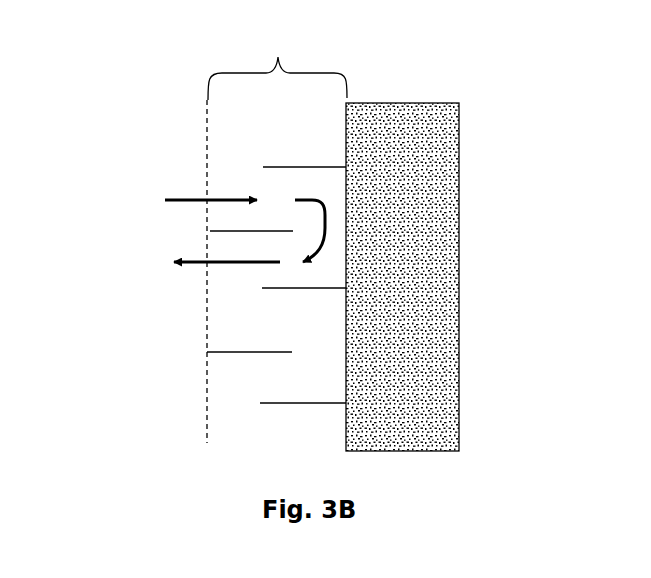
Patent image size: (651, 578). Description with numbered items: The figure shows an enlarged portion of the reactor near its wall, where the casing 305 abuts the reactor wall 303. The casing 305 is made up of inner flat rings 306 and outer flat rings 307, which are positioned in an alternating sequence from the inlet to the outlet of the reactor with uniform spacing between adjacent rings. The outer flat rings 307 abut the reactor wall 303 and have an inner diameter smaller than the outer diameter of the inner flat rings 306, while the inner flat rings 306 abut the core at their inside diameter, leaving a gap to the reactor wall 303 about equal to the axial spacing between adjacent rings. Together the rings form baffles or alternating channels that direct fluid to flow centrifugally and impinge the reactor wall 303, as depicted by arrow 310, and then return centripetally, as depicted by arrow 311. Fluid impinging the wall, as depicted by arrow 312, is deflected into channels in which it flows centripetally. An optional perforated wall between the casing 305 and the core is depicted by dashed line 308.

The reactor wall 303 is at (410, 197).
The casing 305 is at (278, 57).
The inner flat rings 306 is at (235, 353).
The outer flat rings 307 is at (283, 405).
The dashed line 308 is at (204, 145).
The arrow 310 is at (172, 207).
The arrow 311 is at (197, 268).
The arrow 312 is at (328, 252).